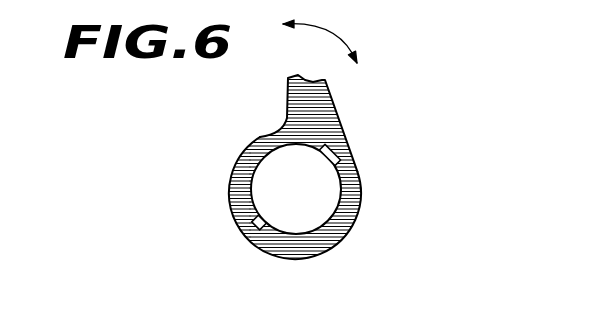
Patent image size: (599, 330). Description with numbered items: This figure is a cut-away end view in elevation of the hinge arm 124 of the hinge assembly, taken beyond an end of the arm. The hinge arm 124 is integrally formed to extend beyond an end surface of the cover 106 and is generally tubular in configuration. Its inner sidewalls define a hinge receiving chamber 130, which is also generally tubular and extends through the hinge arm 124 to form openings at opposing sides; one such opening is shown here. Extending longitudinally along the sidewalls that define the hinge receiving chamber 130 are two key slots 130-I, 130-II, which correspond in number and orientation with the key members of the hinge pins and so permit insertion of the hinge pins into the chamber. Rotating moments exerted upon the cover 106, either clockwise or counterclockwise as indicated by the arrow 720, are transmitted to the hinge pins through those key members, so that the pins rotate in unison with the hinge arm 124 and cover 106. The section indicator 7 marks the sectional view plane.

The arrow 720 is at (330, 27).
The cover 106 is at (310, 111).
The hinge arm 124 is at (247, 162).
The hinge receiving chamber 130 is at (305, 208).
The key slot 130-I is at (344, 154).
The key slot 130-II is at (253, 227).
The section line 7- 7 is at (230, 207).